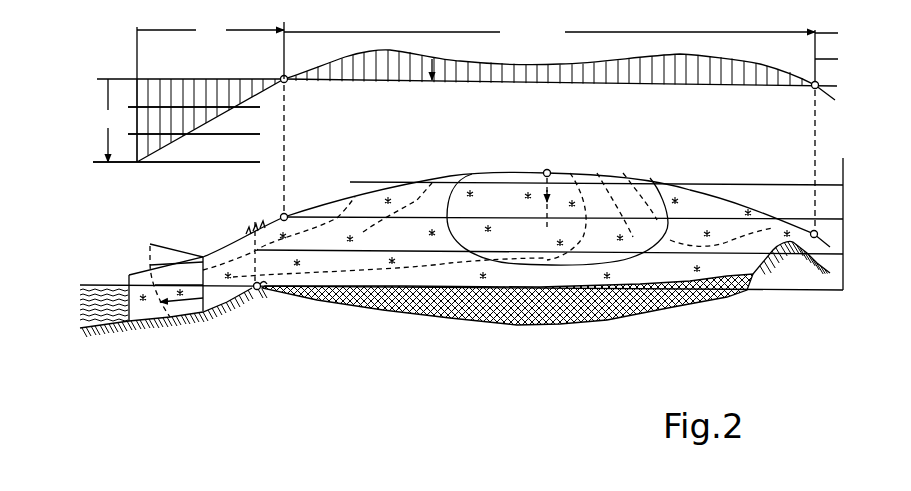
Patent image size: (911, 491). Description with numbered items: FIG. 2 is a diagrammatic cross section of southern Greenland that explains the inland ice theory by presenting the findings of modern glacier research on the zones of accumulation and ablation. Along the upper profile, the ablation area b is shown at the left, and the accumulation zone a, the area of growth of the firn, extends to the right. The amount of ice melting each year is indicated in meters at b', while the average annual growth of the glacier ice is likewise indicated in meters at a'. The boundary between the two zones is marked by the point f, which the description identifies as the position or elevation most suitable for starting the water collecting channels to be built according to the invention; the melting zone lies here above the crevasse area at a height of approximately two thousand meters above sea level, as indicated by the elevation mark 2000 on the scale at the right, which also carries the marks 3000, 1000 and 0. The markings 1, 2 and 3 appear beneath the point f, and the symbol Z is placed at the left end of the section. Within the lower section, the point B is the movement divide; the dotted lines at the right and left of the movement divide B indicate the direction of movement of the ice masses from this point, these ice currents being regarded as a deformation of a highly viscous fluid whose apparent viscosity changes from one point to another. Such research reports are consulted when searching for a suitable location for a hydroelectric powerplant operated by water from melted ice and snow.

The accumulation zone a is at (549, 33).
The average annual growth of the glacier ice a' is at (451, 84).
The ablation area b is at (210, 30).
The amount of ice melting each year b' is at (108, 120).
The point for starting the water collecting channels f is at (284, 39).
The movement divide B is at (547, 170).
The dam / wall structure Z is at (250, 223).
The level line 1 is at (286, 107).
The level line 2 is at (286, 134).
The level line 3 is at (286, 162).
The elevation 3000 is at (874, 186).
The two-thousand-meter elevation 2000 is at (874, 221).
The elevation 1000 is at (874, 256).
The elevation 0 is at (855, 292).